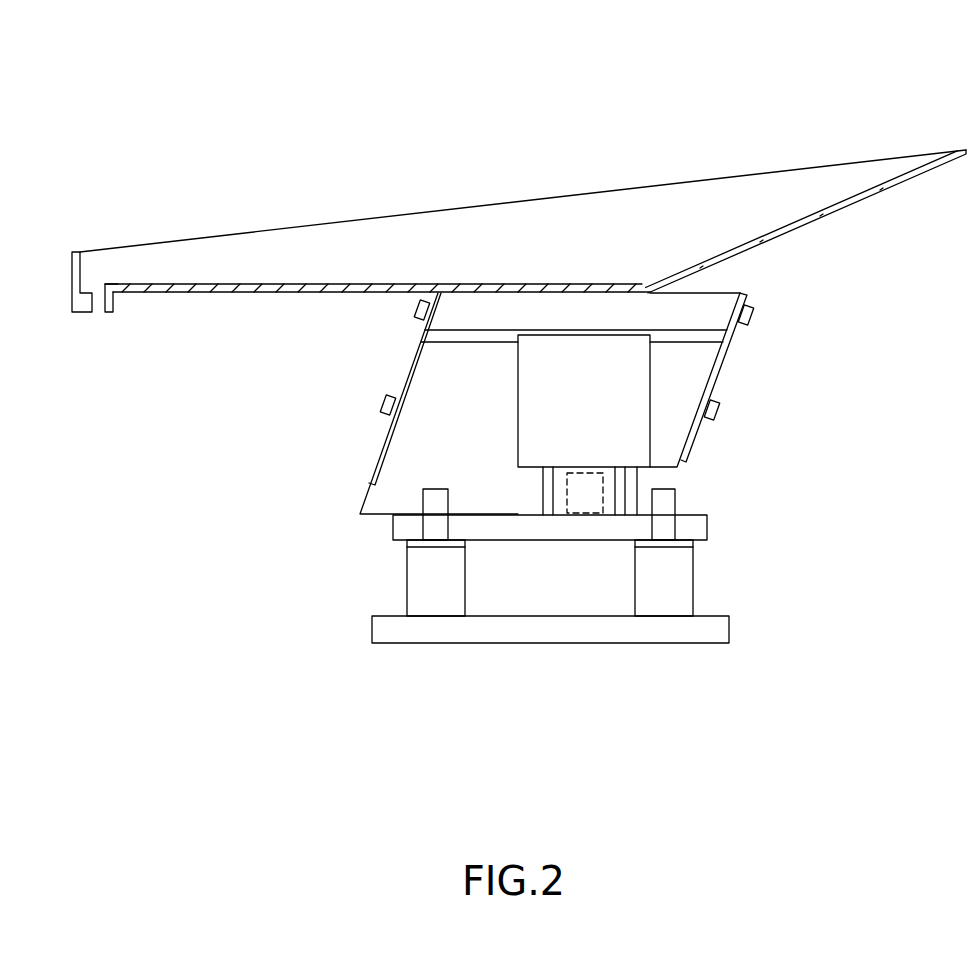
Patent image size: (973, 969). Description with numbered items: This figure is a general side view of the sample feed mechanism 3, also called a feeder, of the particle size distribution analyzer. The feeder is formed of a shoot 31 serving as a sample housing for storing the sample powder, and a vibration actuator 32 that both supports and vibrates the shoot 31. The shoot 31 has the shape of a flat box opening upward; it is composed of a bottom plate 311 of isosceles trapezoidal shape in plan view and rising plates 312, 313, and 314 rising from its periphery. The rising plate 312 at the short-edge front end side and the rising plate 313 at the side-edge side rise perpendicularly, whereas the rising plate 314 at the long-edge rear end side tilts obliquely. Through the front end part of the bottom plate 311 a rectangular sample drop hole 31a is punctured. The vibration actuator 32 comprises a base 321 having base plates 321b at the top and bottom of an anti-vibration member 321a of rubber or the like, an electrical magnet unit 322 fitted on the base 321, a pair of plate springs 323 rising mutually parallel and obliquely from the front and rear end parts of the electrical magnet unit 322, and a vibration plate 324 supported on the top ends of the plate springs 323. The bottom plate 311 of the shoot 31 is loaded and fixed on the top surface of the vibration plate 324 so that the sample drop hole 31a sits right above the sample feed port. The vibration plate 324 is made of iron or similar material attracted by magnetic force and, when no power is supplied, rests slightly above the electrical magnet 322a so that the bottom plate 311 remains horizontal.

The sample feed mechanism 3 is at (745, 120).
The shoot 31 is at (470, 190).
The bottom plate 311 is at (203, 293).
The rising plate 312 is at (70, 273).
The rising plate 313 is at (303, 223).
The rising plate 314 is at (853, 202).
The sample drop hole 31a is at (89, 323).
The vibration actuator 32 is at (745, 679).
The base 321 is at (363, 572).
The anti-vibration member 321a is at (465, 577).
The base plate 321b is at (690, 512).
The electrical magnet unit 322 is at (360, 455).
The electrical magnet 322a is at (617, 415).
The plate spring 323 is at (410, 349).
The vibration plate 324 is at (568, 312).